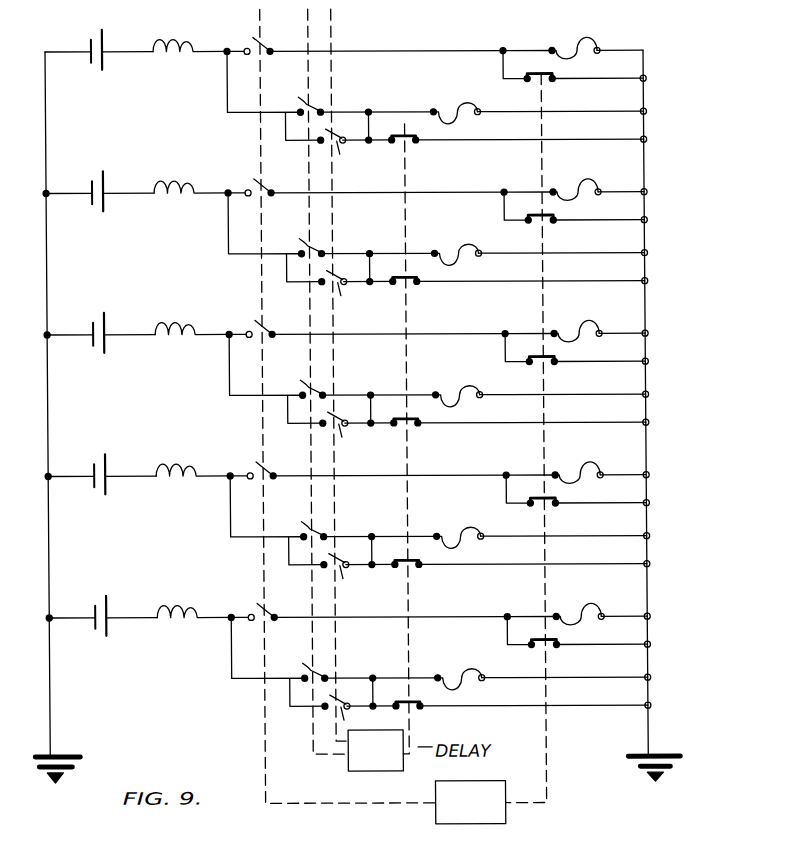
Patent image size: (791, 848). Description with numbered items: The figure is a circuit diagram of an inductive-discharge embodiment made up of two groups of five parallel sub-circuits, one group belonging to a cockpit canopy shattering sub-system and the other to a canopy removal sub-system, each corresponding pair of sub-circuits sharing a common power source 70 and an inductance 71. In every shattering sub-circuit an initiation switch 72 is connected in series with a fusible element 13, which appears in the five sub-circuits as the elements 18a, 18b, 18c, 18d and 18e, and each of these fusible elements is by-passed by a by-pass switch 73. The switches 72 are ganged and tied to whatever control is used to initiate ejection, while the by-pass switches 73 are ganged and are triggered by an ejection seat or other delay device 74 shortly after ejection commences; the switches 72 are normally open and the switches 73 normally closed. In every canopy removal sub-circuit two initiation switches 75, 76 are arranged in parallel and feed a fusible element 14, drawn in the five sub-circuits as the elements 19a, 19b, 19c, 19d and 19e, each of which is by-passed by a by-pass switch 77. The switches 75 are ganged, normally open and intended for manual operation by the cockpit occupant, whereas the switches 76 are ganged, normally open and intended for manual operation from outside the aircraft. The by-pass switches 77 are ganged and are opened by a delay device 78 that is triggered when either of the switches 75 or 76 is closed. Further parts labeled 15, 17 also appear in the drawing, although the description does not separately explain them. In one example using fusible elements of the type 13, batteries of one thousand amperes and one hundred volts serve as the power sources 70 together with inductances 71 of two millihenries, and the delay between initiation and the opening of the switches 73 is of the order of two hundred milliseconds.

The power source 70 is at (103, 605).
The inductance 71 is at (192, 321).
The initiation switch 72 is at (365, 323).
The by-pass switch 73 is at (553, 642).
The delay device 74 is at (478, 765).
The initiation switch 75 is at (303, 381).
The initiation switch 76 is at (342, 434).
The by-pass switch 77 is at (401, 702).
The delay device 78 is at (373, 762).
The fusible element 13 is at (589, 321).
The fusible element 14 is at (463, 385).
The lead wire 15 is at (513, 333).
The lead wire 17 is at (523, 617).
The fusible element 18a is at (586, 38).
The fusible element 18b is at (588, 180).
The fusible element 18c is at (588, 321).
The fusible element 18d is at (590, 463).
The fusible element 18e is at (590, 604).
The fusible element 19a is at (460, 102).
The fusible element 19b is at (462, 243).
The fusible element 19c is at (462, 385).
The fusible element 19d is at (464, 526).
The fusible element 19e is at (464, 668).